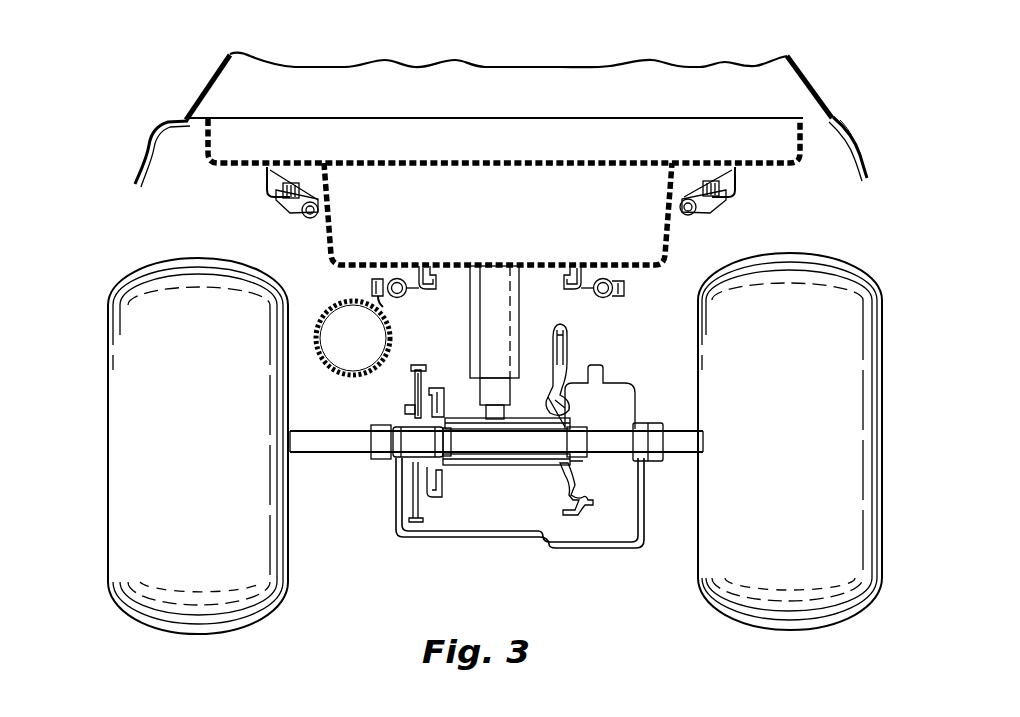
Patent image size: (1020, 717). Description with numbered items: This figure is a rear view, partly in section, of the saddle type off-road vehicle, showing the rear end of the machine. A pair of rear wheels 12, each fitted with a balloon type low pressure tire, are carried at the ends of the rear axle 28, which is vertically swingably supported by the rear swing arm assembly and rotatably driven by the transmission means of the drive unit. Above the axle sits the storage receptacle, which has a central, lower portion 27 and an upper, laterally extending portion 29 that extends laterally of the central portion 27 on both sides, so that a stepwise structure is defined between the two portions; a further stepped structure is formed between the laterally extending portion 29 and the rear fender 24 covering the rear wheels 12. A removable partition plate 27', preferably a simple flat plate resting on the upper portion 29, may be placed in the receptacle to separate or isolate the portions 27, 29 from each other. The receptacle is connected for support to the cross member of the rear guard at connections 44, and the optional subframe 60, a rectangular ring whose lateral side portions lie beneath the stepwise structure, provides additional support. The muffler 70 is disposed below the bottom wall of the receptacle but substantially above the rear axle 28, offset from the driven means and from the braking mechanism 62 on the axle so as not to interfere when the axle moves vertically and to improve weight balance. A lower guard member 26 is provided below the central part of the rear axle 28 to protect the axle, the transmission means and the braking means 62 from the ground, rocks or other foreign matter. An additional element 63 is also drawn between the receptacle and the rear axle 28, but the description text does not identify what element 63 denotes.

The rear wheels 12 is at (113, 503).
The rear fender 24 is at (864, 167).
The lower guard member 26 is at (480, 537).
The central, lower portion 27 is at (452, 214).
The removable partition plate 27' is at (509, 92).
The rear axle 28 is at (320, 453).
The upper, laterally extending portion 29 is at (808, 138).
The connections 44 is at (423, 264).
The subframe 60 is at (685, 210).
The braking mechanism 62 is at (610, 393).
The hydraulic cylinder 63 is at (520, 318).
The muffler 70 is at (368, 352).